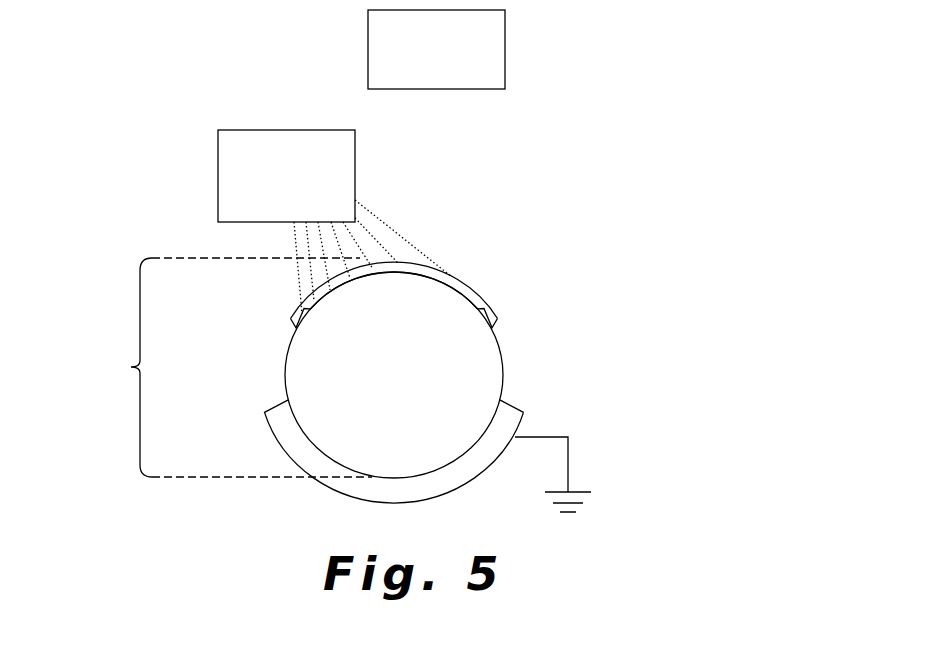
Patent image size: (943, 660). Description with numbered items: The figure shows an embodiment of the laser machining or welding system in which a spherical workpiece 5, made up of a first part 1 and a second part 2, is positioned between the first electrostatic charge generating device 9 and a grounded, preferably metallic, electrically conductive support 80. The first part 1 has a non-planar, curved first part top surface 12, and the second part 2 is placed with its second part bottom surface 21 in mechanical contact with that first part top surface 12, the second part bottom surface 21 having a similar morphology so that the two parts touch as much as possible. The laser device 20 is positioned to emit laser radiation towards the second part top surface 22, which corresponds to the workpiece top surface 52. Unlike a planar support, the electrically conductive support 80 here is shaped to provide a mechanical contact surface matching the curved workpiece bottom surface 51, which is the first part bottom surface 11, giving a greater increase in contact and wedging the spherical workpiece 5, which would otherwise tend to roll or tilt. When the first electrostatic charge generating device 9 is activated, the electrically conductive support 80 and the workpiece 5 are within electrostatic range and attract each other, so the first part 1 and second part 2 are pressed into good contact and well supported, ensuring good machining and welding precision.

The first part 1 is at (466, 387).
The second part 2 is at (404, 279).
The workpiece 5 is at (349, 371).
The first electrostatic charge generating device 9 is at (269, 163).
The first part bottom surface 11 is at (262, 413).
The first part top surface 12 is at (433, 287).
The laser device 20 is at (483, 62).
The second part bottom surface 21 is at (308, 305).
The second part top surface 22 is at (444, 275).
The workpiece bottom surface 51 is at (345, 465).
The workpiece top surface 52 is at (453, 270).
The electrically conductive support 80 is at (497, 435).